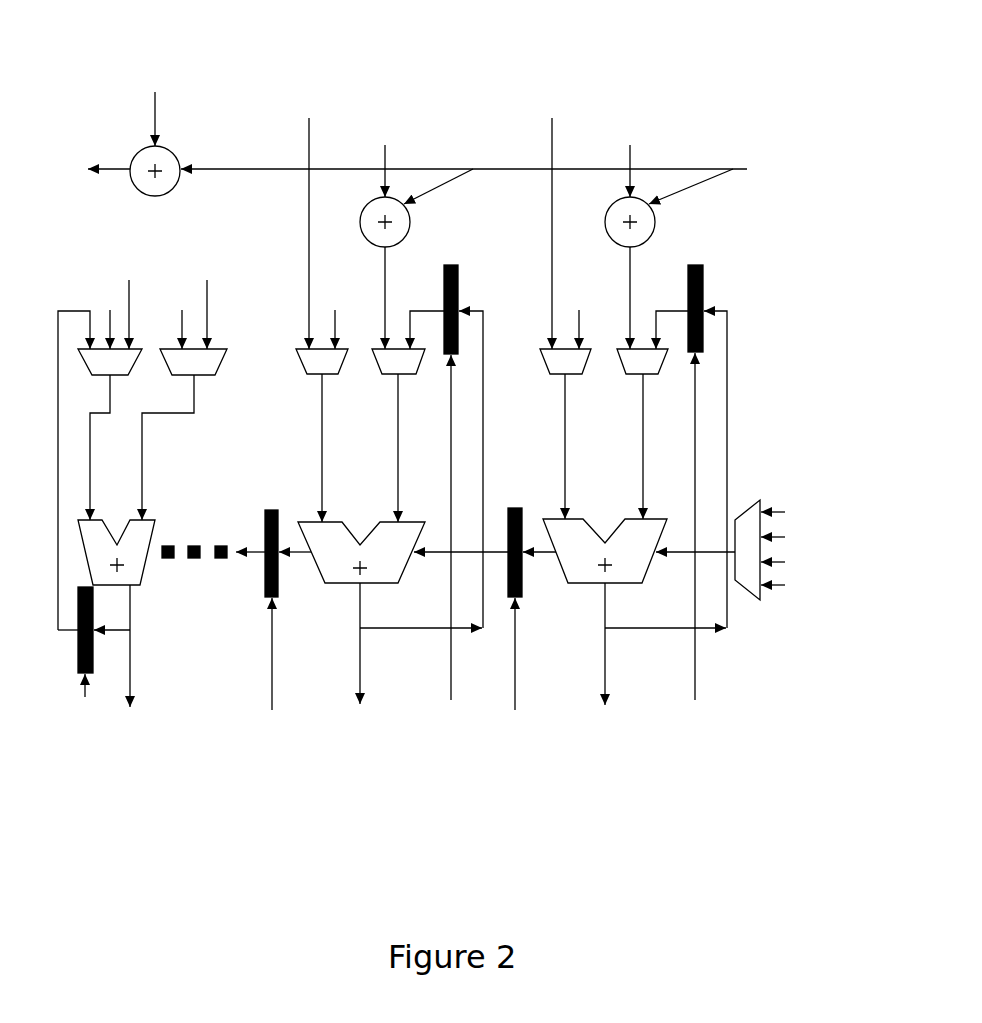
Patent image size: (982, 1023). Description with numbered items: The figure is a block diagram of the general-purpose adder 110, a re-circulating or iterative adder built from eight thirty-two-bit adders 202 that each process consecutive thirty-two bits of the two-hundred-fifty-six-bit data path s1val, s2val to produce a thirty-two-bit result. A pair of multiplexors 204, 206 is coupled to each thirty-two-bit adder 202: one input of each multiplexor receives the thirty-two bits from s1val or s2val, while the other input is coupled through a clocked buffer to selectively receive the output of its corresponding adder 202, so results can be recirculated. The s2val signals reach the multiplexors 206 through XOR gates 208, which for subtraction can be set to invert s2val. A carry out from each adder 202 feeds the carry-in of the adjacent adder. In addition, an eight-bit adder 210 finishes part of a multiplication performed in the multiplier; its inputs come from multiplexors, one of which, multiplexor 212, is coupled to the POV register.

The general-purpose adder 110 is at (178, 827).
The 32-bit adder 202 is at (482, 551).
The multiplexor 204 is at (443, 361).
The multiplexor 206 is at (520, 361).
The XOR gate 208 is at (372, 233).
The 8-bit adder 210 is at (102, 553).
The multiplexor 212 is at (105, 362).